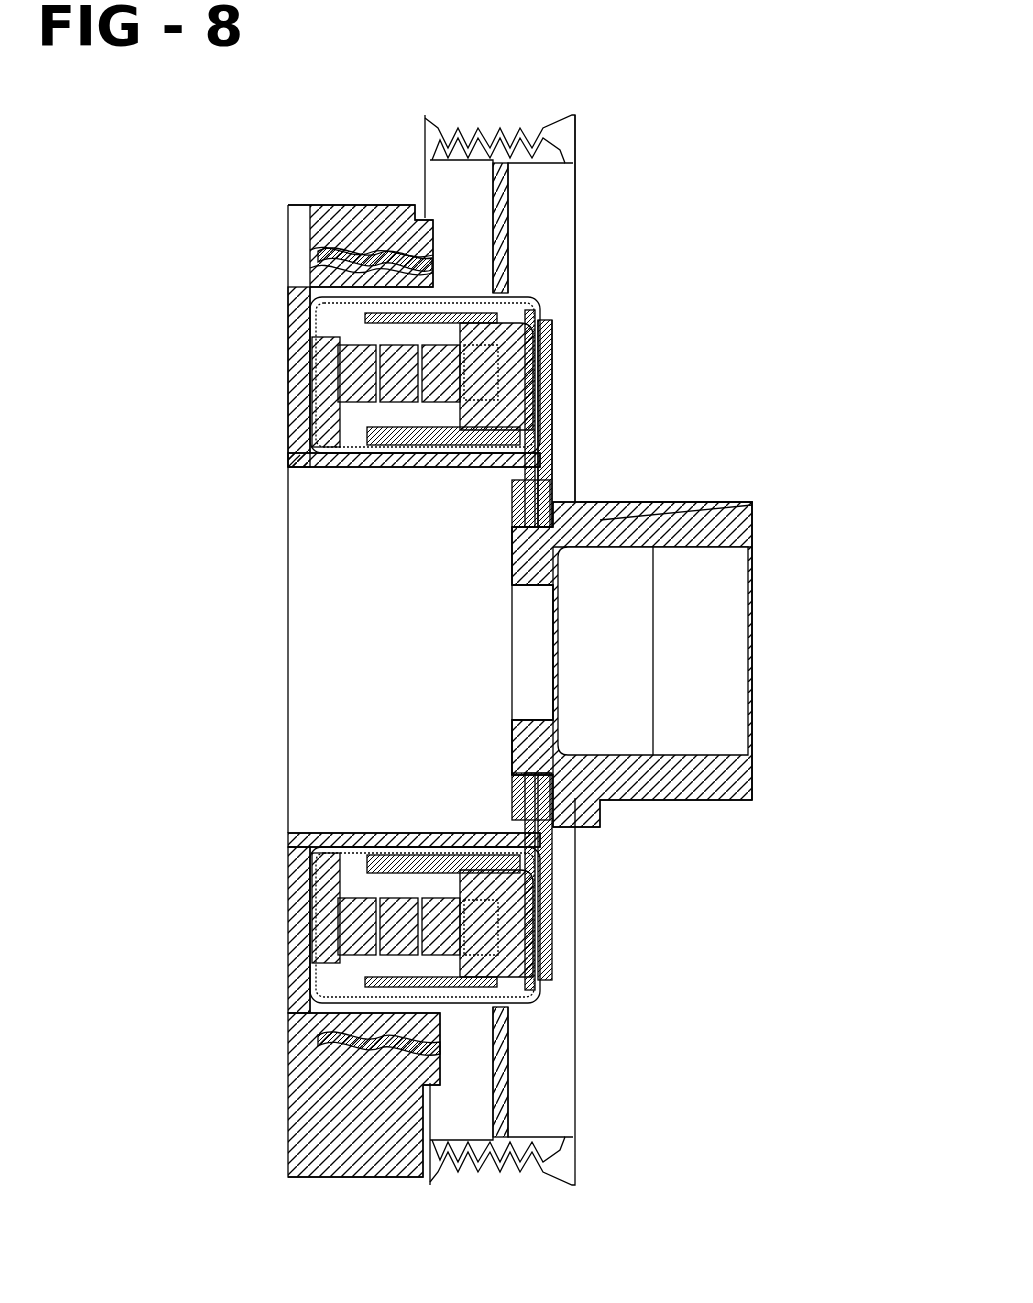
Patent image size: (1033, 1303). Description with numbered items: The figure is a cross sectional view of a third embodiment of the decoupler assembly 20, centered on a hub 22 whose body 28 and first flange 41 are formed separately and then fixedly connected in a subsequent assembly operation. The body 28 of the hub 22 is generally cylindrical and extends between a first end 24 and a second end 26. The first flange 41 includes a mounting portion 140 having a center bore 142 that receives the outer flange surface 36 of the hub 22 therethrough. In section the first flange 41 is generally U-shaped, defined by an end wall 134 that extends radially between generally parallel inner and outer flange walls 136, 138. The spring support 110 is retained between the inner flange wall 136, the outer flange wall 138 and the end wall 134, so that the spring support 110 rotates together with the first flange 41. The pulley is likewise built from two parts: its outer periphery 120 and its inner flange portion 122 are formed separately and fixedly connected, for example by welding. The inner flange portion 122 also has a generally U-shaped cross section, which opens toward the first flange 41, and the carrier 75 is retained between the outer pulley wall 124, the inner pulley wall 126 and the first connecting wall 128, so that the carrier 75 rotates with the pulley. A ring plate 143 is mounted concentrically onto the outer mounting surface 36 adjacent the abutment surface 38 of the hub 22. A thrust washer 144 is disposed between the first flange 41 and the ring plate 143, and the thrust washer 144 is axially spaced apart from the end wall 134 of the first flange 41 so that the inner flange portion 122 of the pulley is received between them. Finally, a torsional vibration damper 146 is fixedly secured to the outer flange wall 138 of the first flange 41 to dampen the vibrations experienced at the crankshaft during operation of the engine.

The decoupler assembly 20 is at (762, 198).
The hub 22 is at (758, 502).
The first end 24 is at (755, 620).
The second end 26 is at (510, 563).
The body 28 is at (712, 500).
The outer flange surface 36 is at (557, 745).
The abutment surface 38 is at (580, 503).
The first flange 41 is at (283, 470).
The carrier 75 is at (548, 343).
The spring support 110 is at (303, 370).
The outer periphery 120 is at (578, 127).
The inner flange portion 122 is at (517, 297).
The outer pulley wall 124 is at (463, 297).
The inner pulley wall 126 is at (407, 473).
The first connecting wall 128 is at (558, 363).
The end wall 134 is at (287, 417).
The inner flange wall 136 is at (333, 473).
The outer flange wall 138 is at (345, 277).
The mounting portion 140 is at (503, 473).
The center bore 142 is at (513, 737).
The ring plate 143 is at (558, 398).
The thrust washer 144 is at (558, 417).
The torsional vibration damper 146 is at (367, 207).